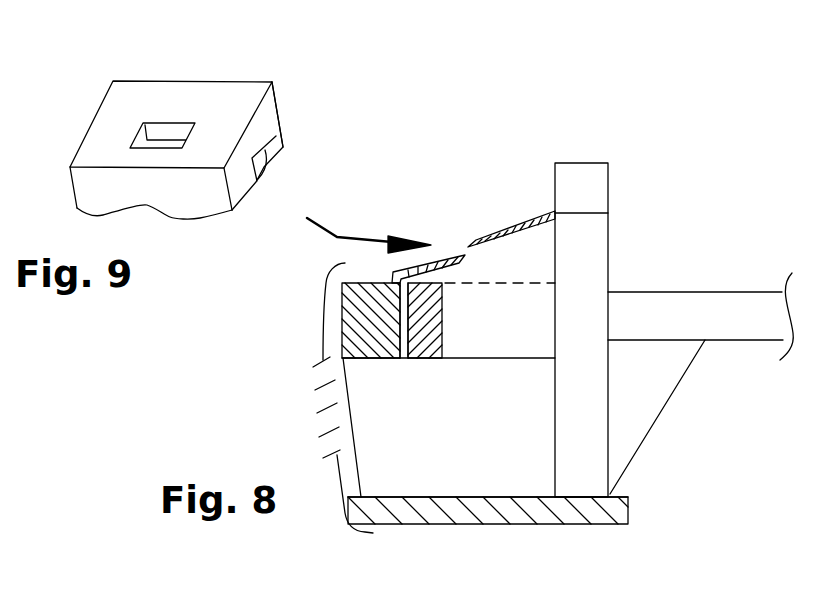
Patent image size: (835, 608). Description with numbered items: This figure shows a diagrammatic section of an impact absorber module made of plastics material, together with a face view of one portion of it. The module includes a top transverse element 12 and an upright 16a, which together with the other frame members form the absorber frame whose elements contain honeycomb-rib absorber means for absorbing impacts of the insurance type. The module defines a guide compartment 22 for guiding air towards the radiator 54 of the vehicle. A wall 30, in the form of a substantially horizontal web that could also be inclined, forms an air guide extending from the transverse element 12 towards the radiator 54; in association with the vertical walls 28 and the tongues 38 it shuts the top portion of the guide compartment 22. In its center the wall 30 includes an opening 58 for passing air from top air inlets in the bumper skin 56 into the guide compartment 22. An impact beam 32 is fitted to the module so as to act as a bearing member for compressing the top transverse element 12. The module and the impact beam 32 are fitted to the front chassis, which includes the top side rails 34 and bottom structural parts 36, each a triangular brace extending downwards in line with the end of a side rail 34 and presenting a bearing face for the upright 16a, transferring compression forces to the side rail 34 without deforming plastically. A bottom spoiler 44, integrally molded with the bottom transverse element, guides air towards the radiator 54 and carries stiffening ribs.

In FIG. 9, the top transverse element 12 is at (98, 185).
In FIG. 8, the top transverse element 12 is at (366, 336).
In FIG. 8, the upright 16a is at (522, 463).
In FIG. 8, the guide compartment 22 is at (448, 390).
In FIG. 9, the vertical wall 28 is at (263, 112).
In FIG. 9, the wall 30 is at (182, 99).
In FIG. 8, the wall 30 is at (516, 222).
In FIG. 9, the impact beam 32 is at (260, 167).
In FIG. 8, the impact beam 32 is at (427, 352).
In FIG. 8, the side rail 34 is at (720, 310).
In FIG. 8, the bottom structural part 36 is at (640, 393).
In FIG. 9, the tongue 38 is at (273, 137).
In FIG. 8, the bottom spoiler 44 is at (415, 510).
In FIG. 8, the radiator 54 is at (583, 247).
In FIG. 8, the bumper skin 56 is at (322, 297).
In FIG. 9, the opening 58 is at (140, 131).
In FIG. 8, the opening 58 is at (462, 250).